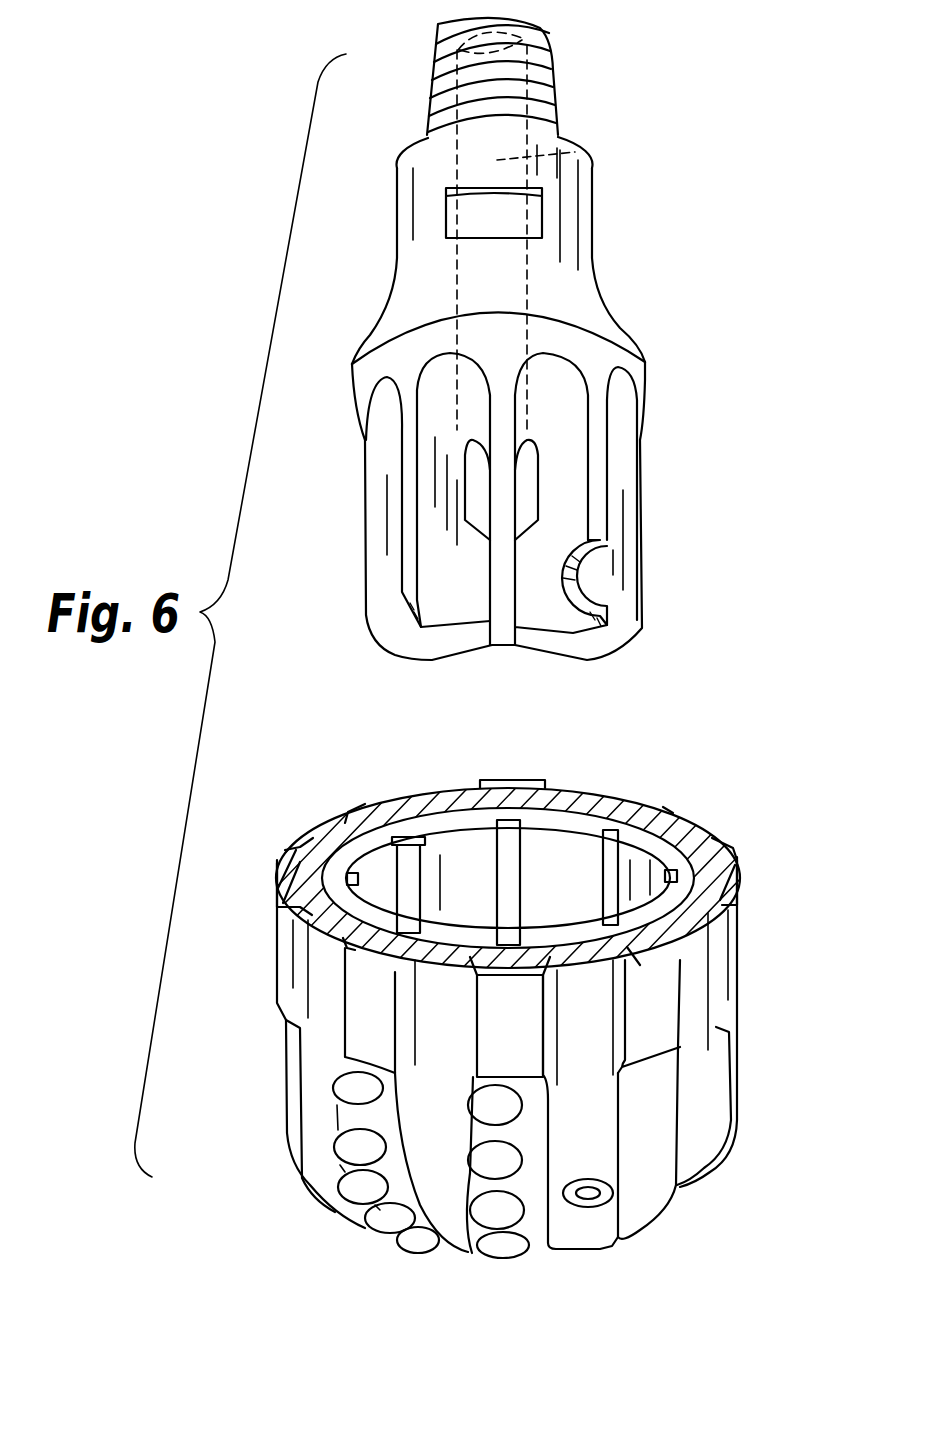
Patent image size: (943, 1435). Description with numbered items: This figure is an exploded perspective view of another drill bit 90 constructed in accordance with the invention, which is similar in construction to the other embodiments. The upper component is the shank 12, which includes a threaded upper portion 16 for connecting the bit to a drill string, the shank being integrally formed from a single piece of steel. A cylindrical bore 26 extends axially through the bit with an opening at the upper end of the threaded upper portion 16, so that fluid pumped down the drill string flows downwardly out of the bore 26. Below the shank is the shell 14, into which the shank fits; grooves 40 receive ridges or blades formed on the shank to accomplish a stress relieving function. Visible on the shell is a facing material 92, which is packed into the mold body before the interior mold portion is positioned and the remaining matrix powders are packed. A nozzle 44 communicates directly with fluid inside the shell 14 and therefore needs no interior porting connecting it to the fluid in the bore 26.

The shank 12 is at (602, 287).
The shell 14 is at (737, 838).
The threaded upper portion 16 is at (548, 95).
The cylindrical bore 26 is at (585, 150).
The grooves 40 is at (520, 955).
The nozzle 44 is at (590, 1200).
The drill bit 90 is at (670, 347).
The facing material 92 is at (378, 797).